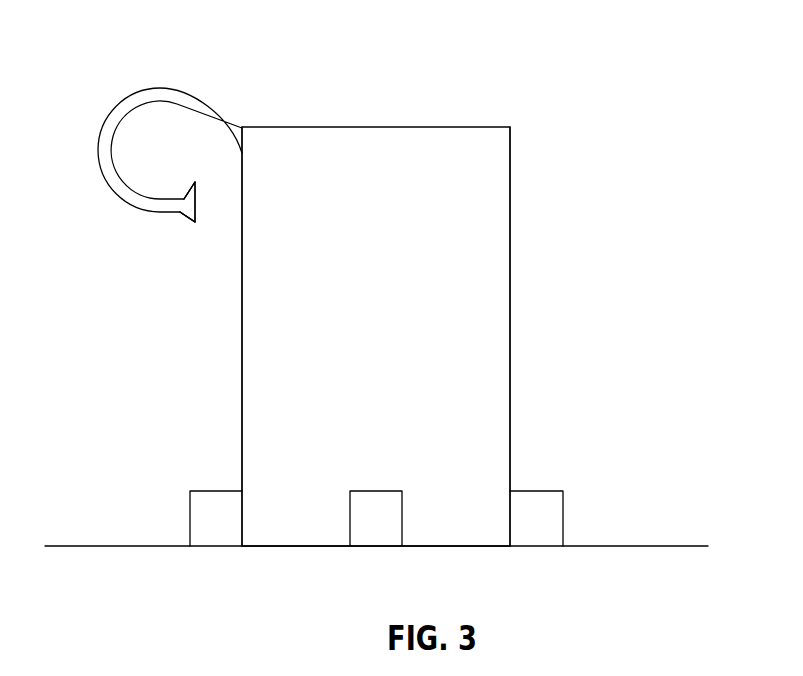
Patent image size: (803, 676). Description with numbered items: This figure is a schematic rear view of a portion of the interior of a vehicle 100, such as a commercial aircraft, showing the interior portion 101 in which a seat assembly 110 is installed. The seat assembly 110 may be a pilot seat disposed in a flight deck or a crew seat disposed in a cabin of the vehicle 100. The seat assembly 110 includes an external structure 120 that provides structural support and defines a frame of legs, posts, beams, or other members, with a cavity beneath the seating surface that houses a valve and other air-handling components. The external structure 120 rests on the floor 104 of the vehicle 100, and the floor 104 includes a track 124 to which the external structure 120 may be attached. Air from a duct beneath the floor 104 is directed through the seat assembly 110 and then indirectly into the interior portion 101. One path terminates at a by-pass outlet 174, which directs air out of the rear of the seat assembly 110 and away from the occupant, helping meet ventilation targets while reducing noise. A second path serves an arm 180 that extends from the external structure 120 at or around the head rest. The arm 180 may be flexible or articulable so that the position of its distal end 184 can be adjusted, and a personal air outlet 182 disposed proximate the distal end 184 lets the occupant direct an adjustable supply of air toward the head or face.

The vehicle 100 is at (214, 49).
The interior portion 101 is at (424, 84).
The seat assembly 110 is at (241, 313).
The external structure 120 is at (510, 378).
The track 124 is at (218, 490).
The by-pass outlet 174 is at (376, 518).
The floor 104 is at (649, 546).
The arm 180 is at (155, 87).
The personal air outlet 182 is at (197, 200).
The distal end 184 is at (179, 225).